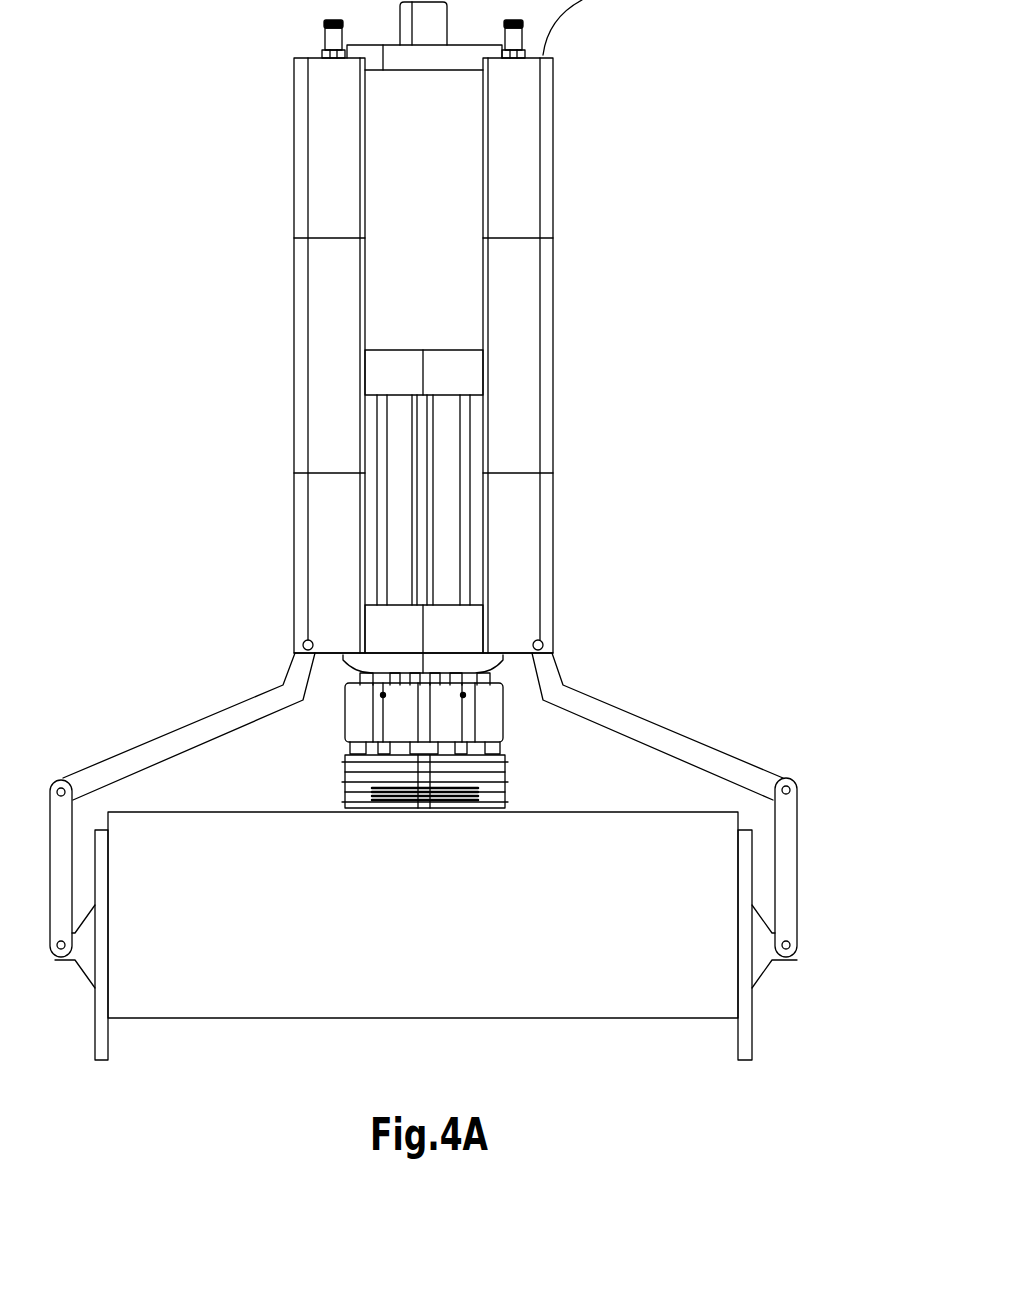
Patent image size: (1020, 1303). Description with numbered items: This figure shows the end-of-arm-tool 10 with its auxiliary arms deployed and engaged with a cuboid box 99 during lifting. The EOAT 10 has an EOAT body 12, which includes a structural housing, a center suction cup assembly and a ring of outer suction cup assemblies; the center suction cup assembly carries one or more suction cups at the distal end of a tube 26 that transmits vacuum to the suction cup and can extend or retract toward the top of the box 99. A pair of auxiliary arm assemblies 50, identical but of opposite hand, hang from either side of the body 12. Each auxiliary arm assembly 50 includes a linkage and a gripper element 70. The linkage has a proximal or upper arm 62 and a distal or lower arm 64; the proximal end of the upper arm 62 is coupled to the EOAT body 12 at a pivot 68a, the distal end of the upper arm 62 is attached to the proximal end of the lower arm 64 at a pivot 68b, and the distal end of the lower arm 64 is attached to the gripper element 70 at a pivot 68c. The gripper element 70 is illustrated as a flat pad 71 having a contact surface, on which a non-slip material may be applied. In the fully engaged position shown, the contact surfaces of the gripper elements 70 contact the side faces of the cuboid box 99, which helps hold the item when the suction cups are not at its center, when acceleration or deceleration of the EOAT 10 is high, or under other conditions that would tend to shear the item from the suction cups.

The end-of-arm-tool 10 is at (729, 135).
The EOAT body 12 is at (267, 648).
The tube 26 is at (420, 678).
The auxiliary arm assembly 50 is at (468, 821).
The gripper element 70 is at (770, 692).
The upper arm 62 is at (662, 742).
The lower arm 64 is at (785, 870).
The pivot 68a is at (547, 672).
The pivot 68b is at (765, 783).
The pivot 68c is at (790, 957).
The cuboid box 99 is at (740, 893).
The flat pad 71 is at (747, 1040).